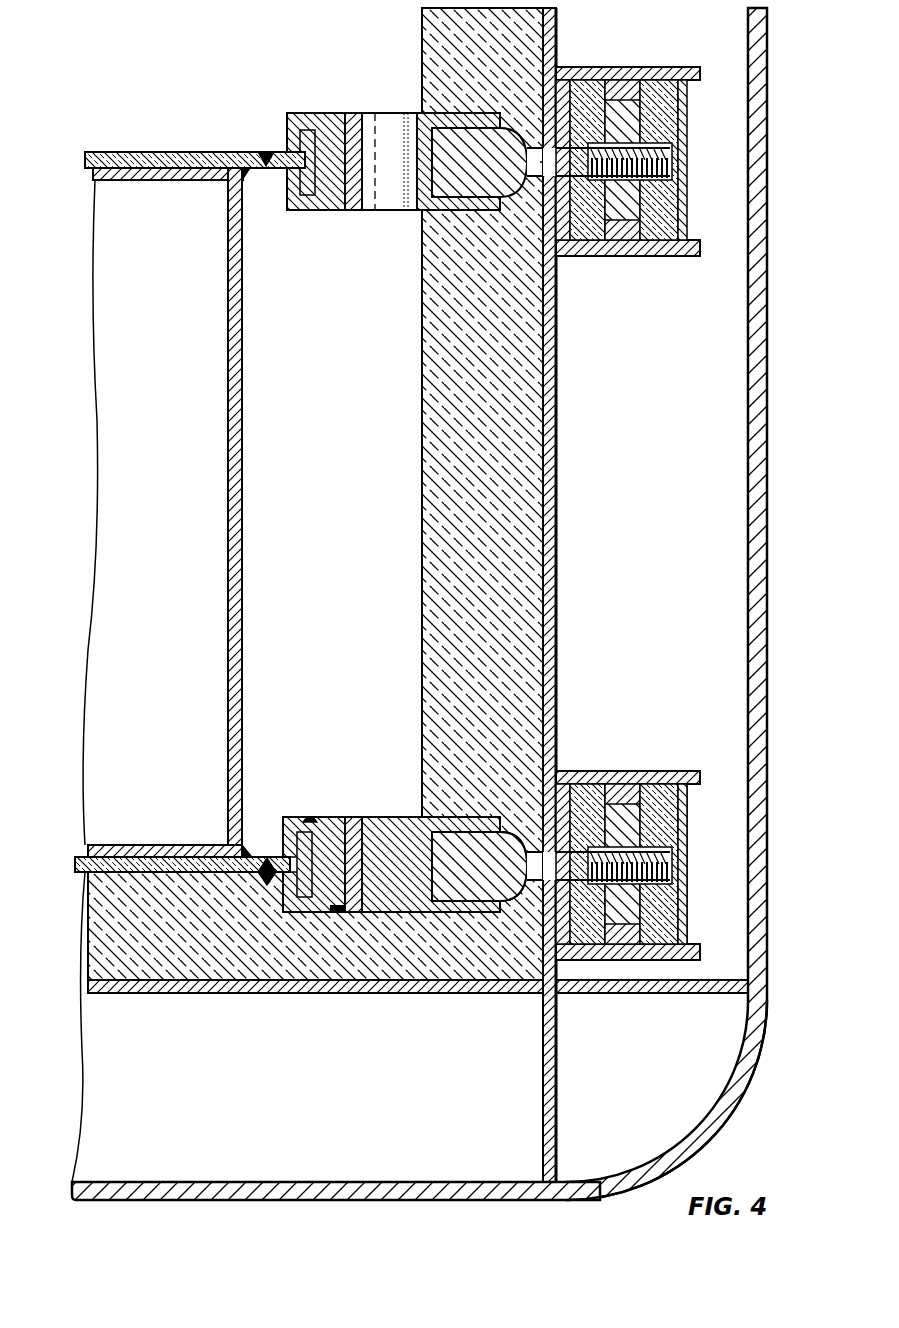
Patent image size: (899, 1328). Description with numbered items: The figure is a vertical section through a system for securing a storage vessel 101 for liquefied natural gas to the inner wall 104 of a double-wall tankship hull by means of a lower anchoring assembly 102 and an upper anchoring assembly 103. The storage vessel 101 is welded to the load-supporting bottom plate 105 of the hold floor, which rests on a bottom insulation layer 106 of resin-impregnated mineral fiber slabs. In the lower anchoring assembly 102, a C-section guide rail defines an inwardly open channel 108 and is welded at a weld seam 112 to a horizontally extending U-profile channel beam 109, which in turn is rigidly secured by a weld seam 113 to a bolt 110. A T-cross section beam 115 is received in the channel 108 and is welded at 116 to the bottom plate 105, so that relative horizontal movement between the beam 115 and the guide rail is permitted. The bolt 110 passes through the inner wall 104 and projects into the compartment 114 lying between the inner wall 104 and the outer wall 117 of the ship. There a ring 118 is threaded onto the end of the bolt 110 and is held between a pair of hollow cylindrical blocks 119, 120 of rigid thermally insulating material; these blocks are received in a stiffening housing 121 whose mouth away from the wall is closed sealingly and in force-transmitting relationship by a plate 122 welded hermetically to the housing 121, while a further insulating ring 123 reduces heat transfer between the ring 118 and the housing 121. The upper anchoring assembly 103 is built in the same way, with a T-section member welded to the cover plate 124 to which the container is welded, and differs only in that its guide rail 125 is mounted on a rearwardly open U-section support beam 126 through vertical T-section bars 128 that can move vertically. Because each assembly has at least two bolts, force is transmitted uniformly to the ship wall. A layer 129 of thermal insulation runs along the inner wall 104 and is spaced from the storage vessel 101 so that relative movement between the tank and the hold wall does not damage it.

The storage vessel 101 is at (162, 675).
The lower anchoring assembly 102 is at (392, 538).
The upper anchoring assembly 103 is at (477, 470).
The inner wall 104 is at (548, 526).
The bottom plate 105 is at (143, 864).
The bottom insulation layer 106 is at (205, 975).
The channel 108 is at (308, 830).
The channel beam 109 is at (290, 815).
The bolt 110 is at (525, 160).
The weld seam 112 is at (332, 912).
The weld seam 113 is at (500, 912).
The compartment 114 is at (650, 500).
The T-cross section beam 115 is at (272, 860).
The weld 116 is at (268, 874).
The outer wall 117 is at (768, 434).
The ring 118 is at (628, 894).
The hollow cylindrical block 119 is at (585, 790).
The hollow cylindrical block 120 is at (660, 788).
The stiffening housing 121 is at (618, 962).
The plate 122 is at (684, 822).
The ring 123 is at (620, 770).
The cover plate 124 is at (177, 150).
The guide rail 125 is at (315, 208).
The support beam 126 is at (465, 208).
The T-section vertical bar 128 is at (385, 206).
The thermal insulation layer 129 is at (530, 408).